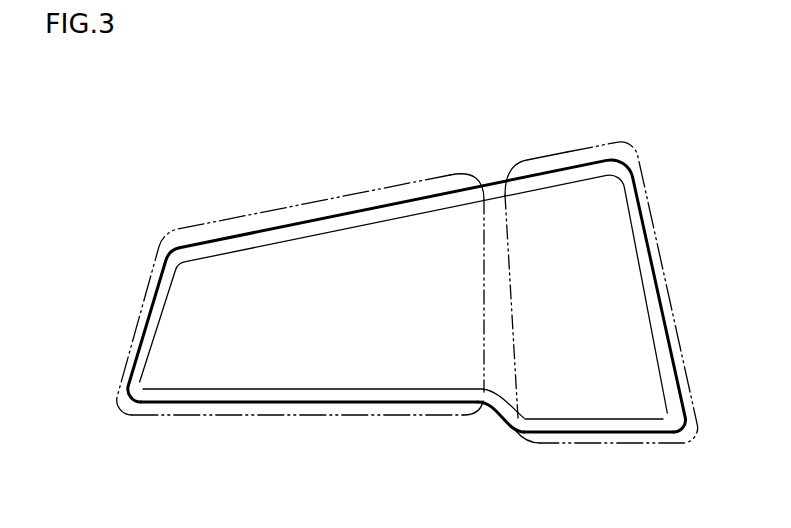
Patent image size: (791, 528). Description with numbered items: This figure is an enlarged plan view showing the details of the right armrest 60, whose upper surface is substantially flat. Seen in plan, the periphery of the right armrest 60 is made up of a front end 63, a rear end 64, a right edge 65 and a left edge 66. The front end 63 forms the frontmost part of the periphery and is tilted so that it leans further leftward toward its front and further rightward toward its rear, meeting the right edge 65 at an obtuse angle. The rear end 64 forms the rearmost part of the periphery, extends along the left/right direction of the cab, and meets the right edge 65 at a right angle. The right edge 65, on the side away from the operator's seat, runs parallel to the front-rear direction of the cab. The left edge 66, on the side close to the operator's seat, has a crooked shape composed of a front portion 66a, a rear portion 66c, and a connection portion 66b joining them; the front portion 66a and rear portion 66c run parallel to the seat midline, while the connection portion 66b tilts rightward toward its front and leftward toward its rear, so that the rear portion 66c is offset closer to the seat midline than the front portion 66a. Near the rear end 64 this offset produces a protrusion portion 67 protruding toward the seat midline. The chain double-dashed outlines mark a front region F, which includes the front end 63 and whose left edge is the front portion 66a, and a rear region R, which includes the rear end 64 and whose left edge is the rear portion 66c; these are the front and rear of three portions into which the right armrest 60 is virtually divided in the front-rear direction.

The right armrest 60 is at (403, 313).
The front end 63 is at (148, 312).
The rear end 64 is at (659, 295).
The right edge 65 is at (378, 206).
The left edge 66 is at (407, 446).
The front portion 66a is at (218, 403).
The connection portion 66b is at (497, 413).
The rear portion 66c is at (627, 433).
The protrusion portion 67 is at (581, 397).
The front region F is at (170, 236).
The rear region R is at (567, 150).